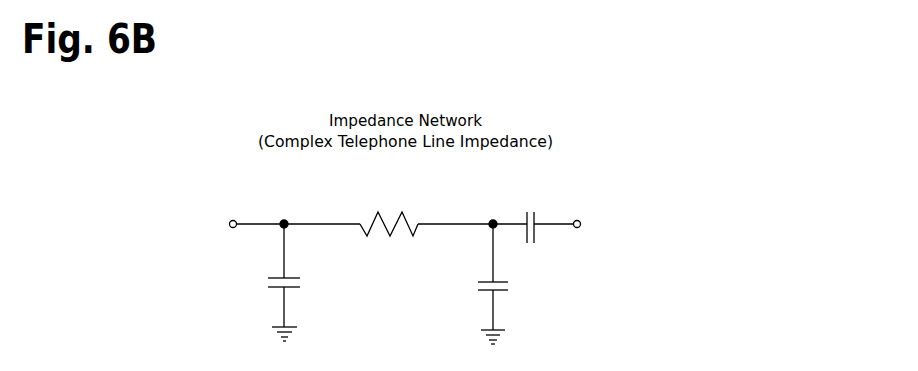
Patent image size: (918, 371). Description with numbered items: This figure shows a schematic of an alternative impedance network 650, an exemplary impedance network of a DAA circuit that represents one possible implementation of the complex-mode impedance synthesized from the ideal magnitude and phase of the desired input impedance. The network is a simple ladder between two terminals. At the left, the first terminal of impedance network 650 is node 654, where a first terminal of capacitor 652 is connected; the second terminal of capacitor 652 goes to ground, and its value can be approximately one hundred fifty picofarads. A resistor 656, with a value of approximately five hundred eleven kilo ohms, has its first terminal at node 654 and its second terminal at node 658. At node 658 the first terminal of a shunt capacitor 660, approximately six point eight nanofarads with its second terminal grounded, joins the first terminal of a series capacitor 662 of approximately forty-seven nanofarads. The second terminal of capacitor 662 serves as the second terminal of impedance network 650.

The impedance network 650 is at (795, 71).
The capacitor 652 is at (277, 288).
The node 654 is at (284, 219).
The resistor 656 is at (412, 203).
The node 658 is at (490, 229).
The capacitor 660 is at (502, 292).
The capacitor 662 is at (540, 230).